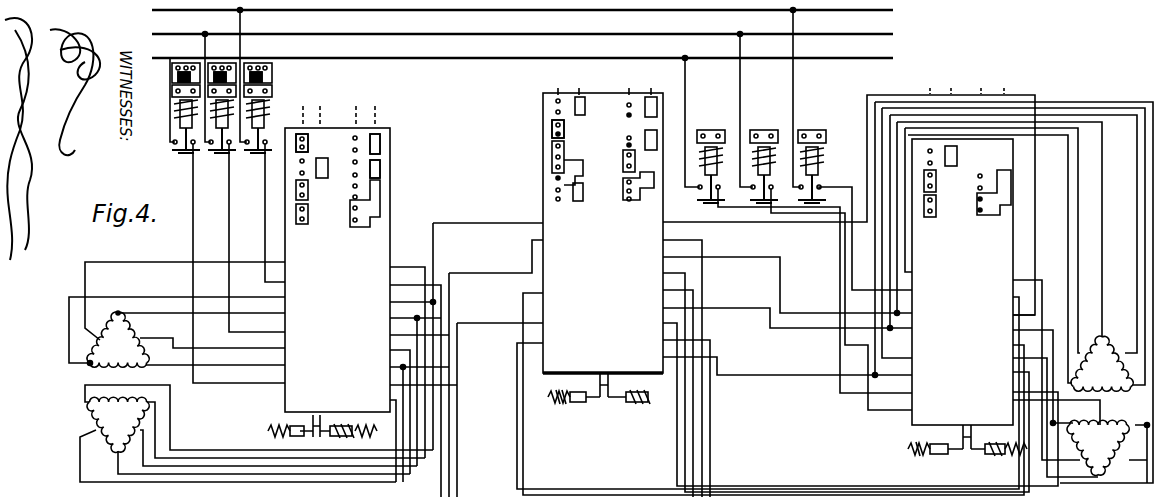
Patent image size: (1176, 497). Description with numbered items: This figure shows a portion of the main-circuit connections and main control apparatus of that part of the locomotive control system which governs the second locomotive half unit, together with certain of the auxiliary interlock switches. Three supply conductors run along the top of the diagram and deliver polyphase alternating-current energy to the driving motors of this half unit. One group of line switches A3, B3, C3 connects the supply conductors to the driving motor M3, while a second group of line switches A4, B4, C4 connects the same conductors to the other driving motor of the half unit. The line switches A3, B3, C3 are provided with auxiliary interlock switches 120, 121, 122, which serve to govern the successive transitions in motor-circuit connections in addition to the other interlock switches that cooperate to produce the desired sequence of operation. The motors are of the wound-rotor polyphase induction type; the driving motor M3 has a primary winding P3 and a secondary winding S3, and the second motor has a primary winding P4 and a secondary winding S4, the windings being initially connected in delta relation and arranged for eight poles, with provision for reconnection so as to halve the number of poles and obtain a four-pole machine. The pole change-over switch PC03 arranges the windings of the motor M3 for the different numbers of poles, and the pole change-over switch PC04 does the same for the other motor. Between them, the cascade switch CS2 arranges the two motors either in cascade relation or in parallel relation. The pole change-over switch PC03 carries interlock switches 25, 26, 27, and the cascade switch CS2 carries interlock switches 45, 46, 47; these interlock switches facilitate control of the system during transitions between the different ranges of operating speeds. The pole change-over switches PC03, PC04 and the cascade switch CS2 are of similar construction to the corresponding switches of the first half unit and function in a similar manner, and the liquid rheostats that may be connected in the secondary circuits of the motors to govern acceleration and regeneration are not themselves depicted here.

The auxiliary interlock switch 120 is at (190, 76).
The auxiliary interlock switch 121 is at (222, 64).
The auxiliary interlock switch 122 is at (266, 74).
The interlock switch 25 is at (309, 142).
The interlock switch 26 is at (369, 145).
The interlock switch 27 is at (368, 165).
The interlock switch 45 is at (585, 107).
The interlock switch 46 is at (564, 130).
The interlock switch 47 is at (643, 113).
The line switch A3 is at (222, 220).
The line switch B3 is at (242, 183).
The line switch C3 is at (260, 146).
The line switch A4 is at (798, 225).
The line switch B4 is at (826, 222).
The line switch C4 is at (852, 150).
The pole change-over switch PC03 is at (329, 265).
The cascade switch CS2 is at (603, 241).
The pole change-over switch PC04 is at (967, 265).
The driving motor M3 is at (95, 375).
The primary winding P3 is at (118, 339).
The secondary winding S3 is at (118, 424).
The primary winding P4 is at (1102, 363).
The secondary winding S4 is at (1098, 447).